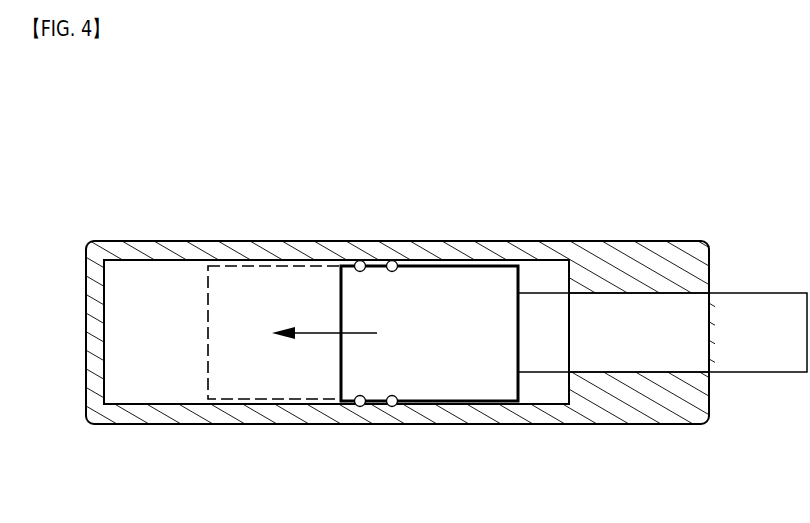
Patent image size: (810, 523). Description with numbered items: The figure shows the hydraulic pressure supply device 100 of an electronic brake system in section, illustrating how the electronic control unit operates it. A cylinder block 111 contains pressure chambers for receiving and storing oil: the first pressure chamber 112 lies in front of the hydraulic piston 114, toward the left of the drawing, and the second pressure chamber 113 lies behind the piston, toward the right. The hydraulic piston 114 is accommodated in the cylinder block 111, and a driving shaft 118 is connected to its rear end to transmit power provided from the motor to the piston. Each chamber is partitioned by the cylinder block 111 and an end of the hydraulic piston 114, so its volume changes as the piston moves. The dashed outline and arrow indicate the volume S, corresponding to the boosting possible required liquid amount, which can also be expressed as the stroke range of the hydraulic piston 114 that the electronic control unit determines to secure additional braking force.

The hydraulic pressure supply device 100 is at (749, 176).
The cylinder block 111 is at (408, 250).
The first pressure chamber 112 is at (130, 335).
The second pressure chamber 113 is at (532, 384).
The hydraulic piston 114 is at (448, 388).
The driving shaft 118 is at (758, 360).
The volume S is at (258, 387).